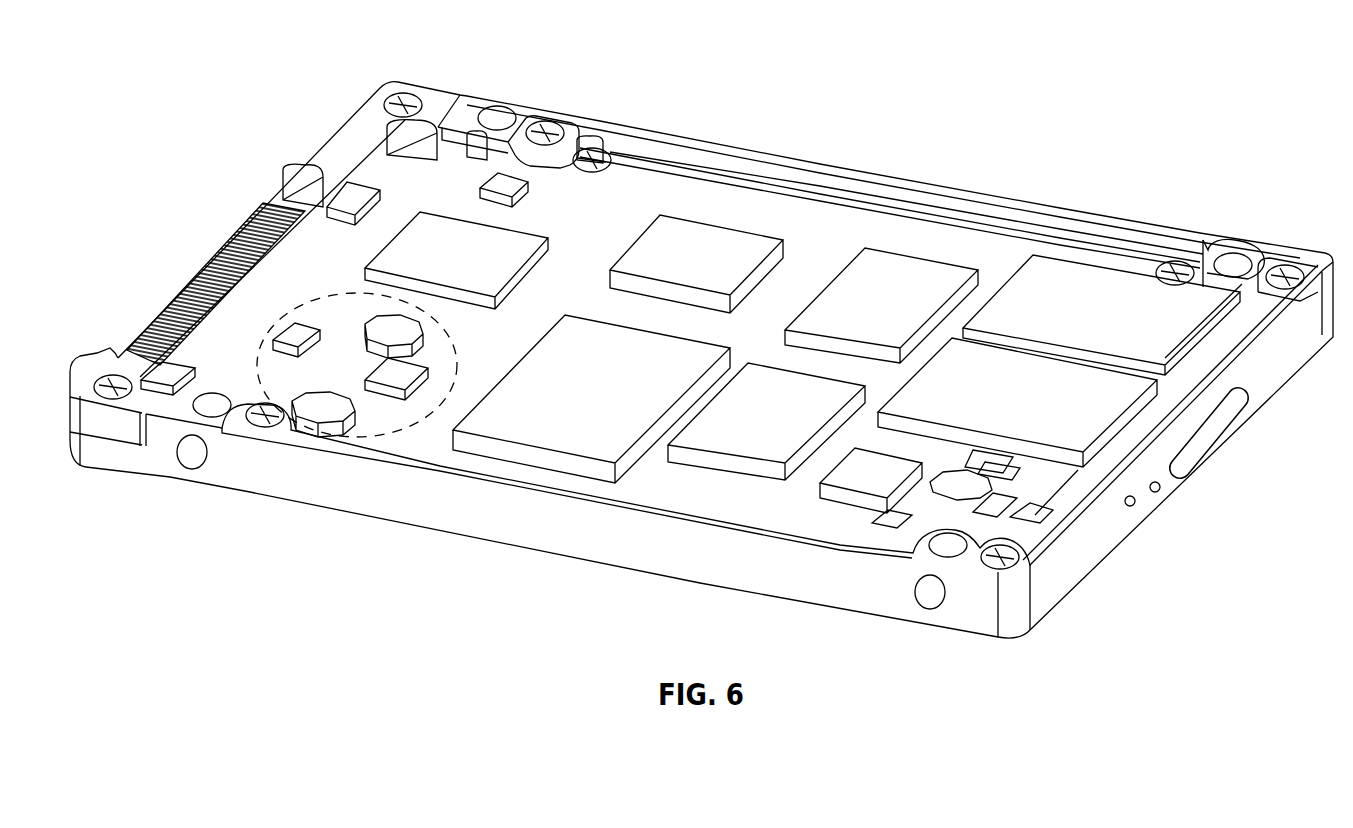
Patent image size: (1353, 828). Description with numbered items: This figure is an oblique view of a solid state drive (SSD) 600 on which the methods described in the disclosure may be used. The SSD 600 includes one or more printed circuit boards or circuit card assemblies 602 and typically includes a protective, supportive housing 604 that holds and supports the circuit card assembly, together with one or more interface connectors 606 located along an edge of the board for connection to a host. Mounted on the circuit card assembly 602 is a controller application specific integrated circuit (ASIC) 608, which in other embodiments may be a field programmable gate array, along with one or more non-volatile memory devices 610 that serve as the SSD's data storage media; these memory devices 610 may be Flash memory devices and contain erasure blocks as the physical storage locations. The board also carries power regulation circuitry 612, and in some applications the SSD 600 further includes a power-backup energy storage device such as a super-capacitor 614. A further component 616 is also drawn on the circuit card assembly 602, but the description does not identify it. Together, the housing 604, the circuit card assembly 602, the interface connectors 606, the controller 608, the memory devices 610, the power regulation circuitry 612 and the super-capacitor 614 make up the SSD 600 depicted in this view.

The solid state drive 600 is at (1174, 64).
The printed circuit board 602 is at (790, 207).
The housing 604 is at (400, 510).
The interface connector 606 is at (172, 316).
The controller application specific integrated circuit 608 is at (432, 242).
The non-volatile memory device 610 is at (832, 387).
The power regulation circuitry 612 is at (313, 307).
The super-capacitor 614 is at (592, 464).
The integrated circuit chip 616 is at (687, 232).